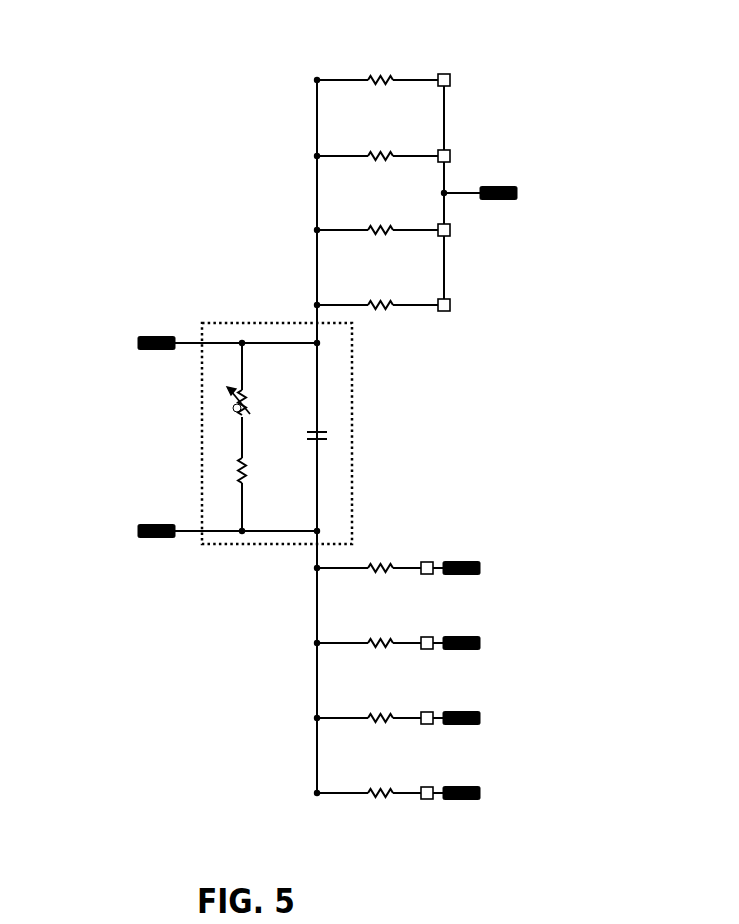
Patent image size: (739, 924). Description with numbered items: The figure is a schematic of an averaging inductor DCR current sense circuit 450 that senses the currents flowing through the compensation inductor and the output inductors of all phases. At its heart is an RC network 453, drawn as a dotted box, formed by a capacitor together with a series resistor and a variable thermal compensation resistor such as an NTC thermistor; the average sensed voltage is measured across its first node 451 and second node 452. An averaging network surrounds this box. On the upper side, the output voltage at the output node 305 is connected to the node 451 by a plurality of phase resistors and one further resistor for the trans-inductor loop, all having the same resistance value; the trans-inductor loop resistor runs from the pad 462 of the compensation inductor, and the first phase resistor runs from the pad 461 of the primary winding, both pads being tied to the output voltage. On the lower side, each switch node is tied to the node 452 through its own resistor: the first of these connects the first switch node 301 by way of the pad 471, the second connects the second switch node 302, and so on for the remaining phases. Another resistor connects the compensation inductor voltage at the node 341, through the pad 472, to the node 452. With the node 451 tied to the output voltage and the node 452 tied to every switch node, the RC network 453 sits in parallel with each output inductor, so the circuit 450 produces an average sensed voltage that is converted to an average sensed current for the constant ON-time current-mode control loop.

The averaging inductor DCR current sense circuit 450 is at (113, 93).
The node 451 is at (155, 336).
The node 452 is at (155, 524).
The RC network 453 is at (353, 405).
The pad 461 is at (448, 312).
The pad 462 is at (447, 73).
The output node 305 is at (500, 186).
The node 341 is at (462, 560).
The pad 472 is at (427, 576).
The switch node 302 is at (462, 711).
The switch node 301 is at (462, 786).
The pad 471 is at (427, 801).